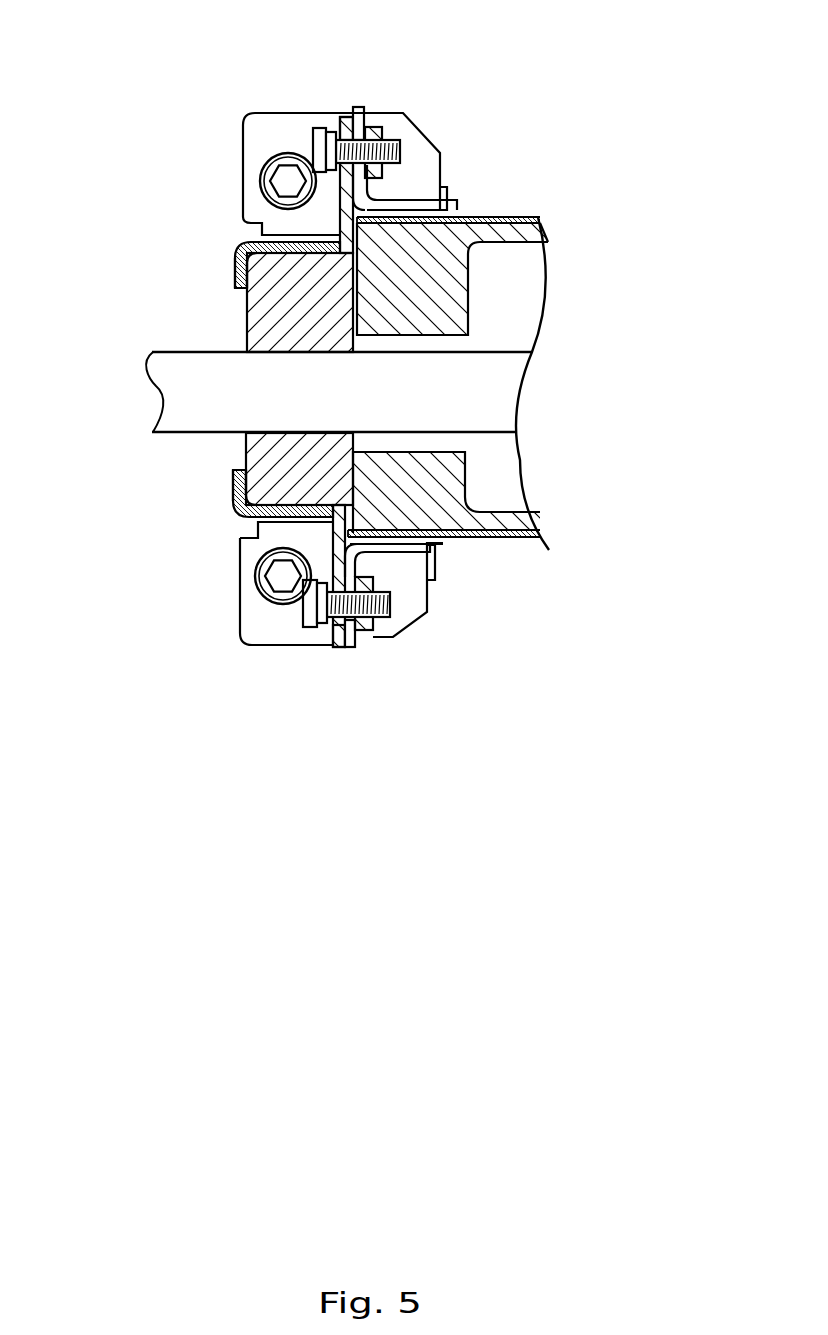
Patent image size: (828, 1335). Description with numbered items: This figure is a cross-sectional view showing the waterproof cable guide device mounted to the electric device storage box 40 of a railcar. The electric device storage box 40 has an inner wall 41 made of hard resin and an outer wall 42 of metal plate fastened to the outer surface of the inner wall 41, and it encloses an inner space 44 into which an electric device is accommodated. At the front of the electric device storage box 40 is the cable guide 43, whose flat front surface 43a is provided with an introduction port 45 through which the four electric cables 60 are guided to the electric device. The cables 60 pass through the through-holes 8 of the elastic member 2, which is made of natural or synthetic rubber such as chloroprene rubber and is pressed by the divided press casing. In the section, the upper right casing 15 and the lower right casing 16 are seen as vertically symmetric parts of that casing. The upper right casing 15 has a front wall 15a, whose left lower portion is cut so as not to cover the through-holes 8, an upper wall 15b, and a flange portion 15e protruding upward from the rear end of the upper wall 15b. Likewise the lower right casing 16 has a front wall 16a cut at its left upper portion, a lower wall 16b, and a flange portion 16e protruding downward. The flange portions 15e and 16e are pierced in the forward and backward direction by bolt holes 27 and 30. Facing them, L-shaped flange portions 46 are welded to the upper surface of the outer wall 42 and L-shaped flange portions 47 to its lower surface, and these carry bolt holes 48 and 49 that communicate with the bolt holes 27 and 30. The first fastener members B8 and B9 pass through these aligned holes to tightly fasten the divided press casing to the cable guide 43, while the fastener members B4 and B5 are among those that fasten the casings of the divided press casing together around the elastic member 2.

The elastic member 2 is at (232, 453).
The through-holes 8 is at (292, 340).
The upper right casing 15 is at (255, 250).
The front wall 15a is at (237, 282).
The upper wall 15b is at (335, 236).
The flange portion 15e is at (349, 110).
The lower right casing 16 is at (255, 511).
The front wall 16a is at (233, 490).
The lower wall 16b is at (335, 530).
The flange portion 16e is at (336, 645).
The bolt hole 27 is at (327, 130).
The bolt hole 30 is at (325, 625).
The electric device storage box 40 is at (522, 205).
The inner wall 41 is at (533, 237).
The outer wall 42 is at (517, 217).
The cable guide 43 is at (485, 214).
The flat front surface 43a is at (355, 487).
The inner space 44 is at (537, 267).
The introduction port 45 is at (455, 348).
The flange portions 46 is at (357, 110).
The flange portions 47 is at (349, 645).
The bolt holes 48 is at (376, 114).
The bolt holes 49 is at (380, 630).
The electric cables 60 is at (507, 398).
The fastener member B4 is at (259, 181).
The fastener member B5 is at (257, 580).
The first fastener member B8 is at (310, 152).
The first fastener member B9 is at (300, 612).